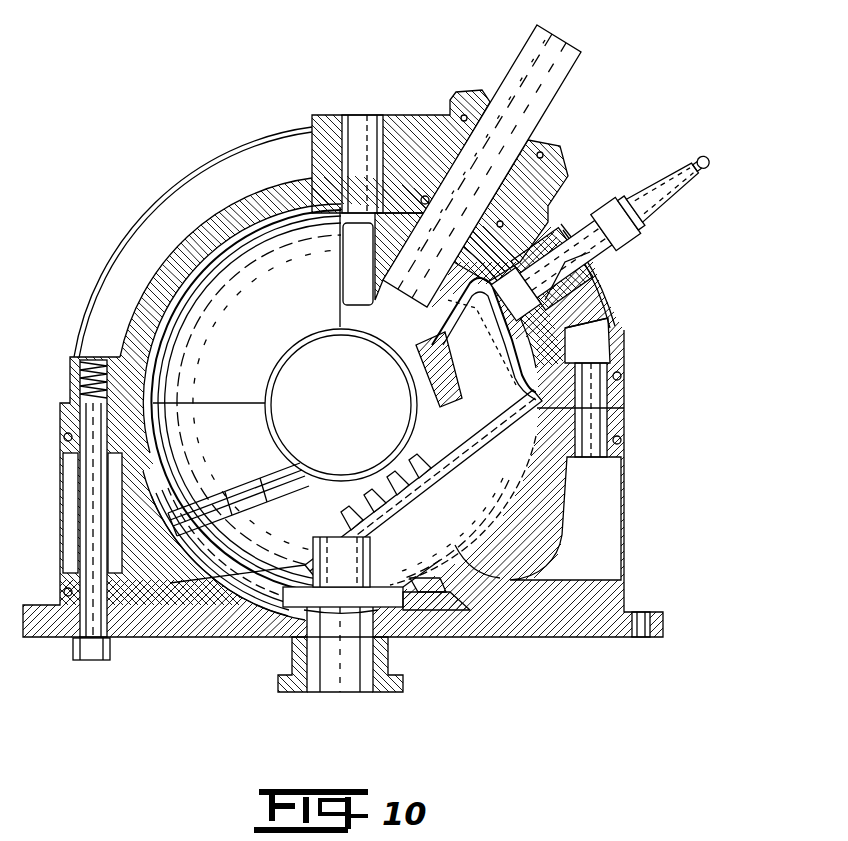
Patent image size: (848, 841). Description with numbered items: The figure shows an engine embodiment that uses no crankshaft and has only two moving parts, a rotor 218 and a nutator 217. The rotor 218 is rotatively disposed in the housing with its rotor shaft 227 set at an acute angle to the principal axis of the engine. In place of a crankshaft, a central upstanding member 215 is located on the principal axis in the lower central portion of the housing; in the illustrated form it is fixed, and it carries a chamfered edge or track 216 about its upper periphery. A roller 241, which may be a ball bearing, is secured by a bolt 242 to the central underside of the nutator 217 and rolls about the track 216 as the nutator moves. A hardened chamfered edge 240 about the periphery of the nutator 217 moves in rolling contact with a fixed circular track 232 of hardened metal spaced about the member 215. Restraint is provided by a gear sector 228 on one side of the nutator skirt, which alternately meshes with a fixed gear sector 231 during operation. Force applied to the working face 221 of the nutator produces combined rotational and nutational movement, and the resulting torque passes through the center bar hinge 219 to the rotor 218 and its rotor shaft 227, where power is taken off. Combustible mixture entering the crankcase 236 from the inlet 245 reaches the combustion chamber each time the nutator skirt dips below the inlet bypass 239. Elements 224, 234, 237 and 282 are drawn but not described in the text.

The central upstanding member 215 is at (283, 608).
The chamfered edge or track 216 is at (235, 478).
The nutator 217 is at (460, 453).
The rotor 218 is at (404, 205).
The center bar hinge 219 is at (270, 373).
The working face 221 is at (110, 510).
The tool 224 is at (626, 243).
The rotor shaft 227 is at (578, 44).
The gear sector 228 is at (275, 456).
The fixed gear sector 231 is at (433, 583).
The fixed circular track 232 is at (417, 587).
The cover 234 is at (503, 368).
The crankcase 236 is at (463, 547).
The liner 237 is at (186, 540).
The inlet bypass 239 is at (233, 603).
The hardened chamfered edge 240 is at (473, 463).
The roller 241 is at (408, 522).
The bolt 242 is at (470, 537).
The inlet 245 is at (350, 668).
The disc 282 is at (298, 408).